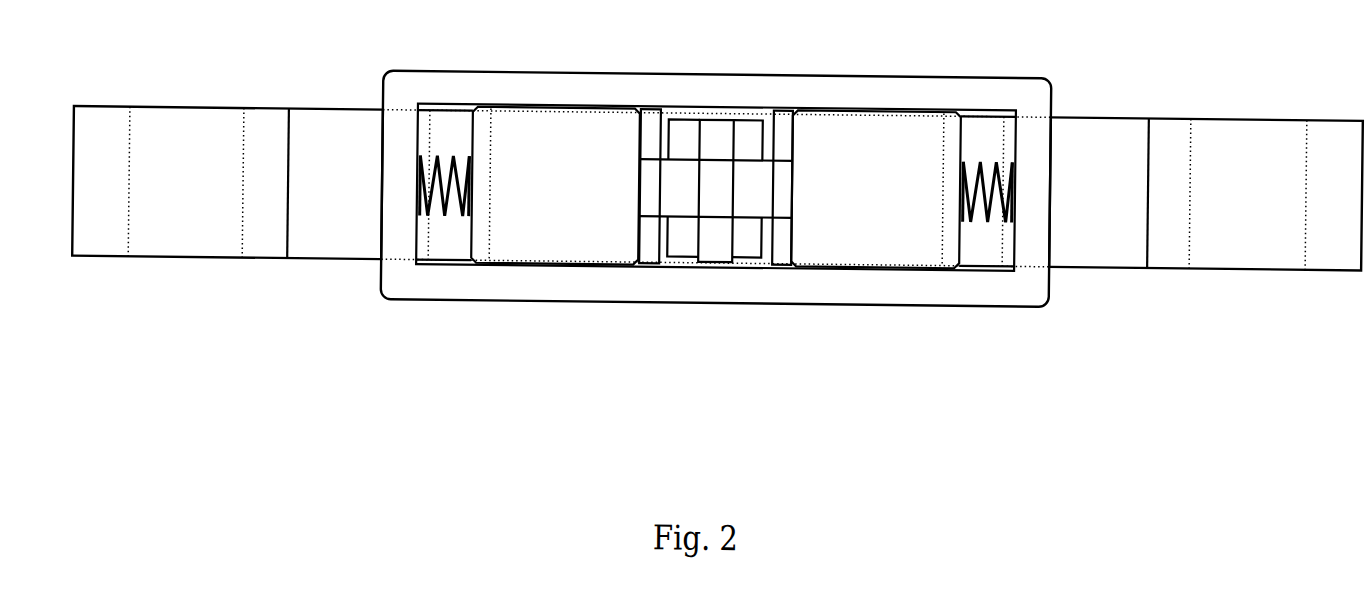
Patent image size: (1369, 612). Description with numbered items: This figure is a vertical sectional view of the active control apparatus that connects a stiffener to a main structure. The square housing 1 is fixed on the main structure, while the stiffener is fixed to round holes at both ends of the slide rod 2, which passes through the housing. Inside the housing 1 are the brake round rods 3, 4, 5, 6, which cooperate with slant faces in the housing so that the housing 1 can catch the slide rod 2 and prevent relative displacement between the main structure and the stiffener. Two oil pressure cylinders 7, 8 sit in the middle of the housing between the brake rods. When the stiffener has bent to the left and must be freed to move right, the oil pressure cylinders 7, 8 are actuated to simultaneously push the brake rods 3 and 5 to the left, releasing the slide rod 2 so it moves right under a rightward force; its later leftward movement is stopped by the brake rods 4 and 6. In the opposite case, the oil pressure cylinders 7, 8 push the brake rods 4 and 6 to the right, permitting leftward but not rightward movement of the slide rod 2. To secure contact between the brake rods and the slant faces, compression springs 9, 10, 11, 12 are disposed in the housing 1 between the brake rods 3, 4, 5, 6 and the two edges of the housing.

The square housing 1 is at (715, 92).
The slide rod 2 is at (217, 208).
The brake round rod 3 is at (555, 186).
The brake round rod 4 is at (876, 189).
The brake round rod 5 is at (548, 210).
The brake round rod 6 is at (863, 210).
The oil pressure cylinder 7 is at (768, 235).
The oil pressure cylinder 8 is at (710, 192).
The compression spring 9 is at (505, 131).
The compression spring 10 is at (1053, 140).
The compression spring 11 is at (437, 160).
The compression spring 12 is at (988, 165).